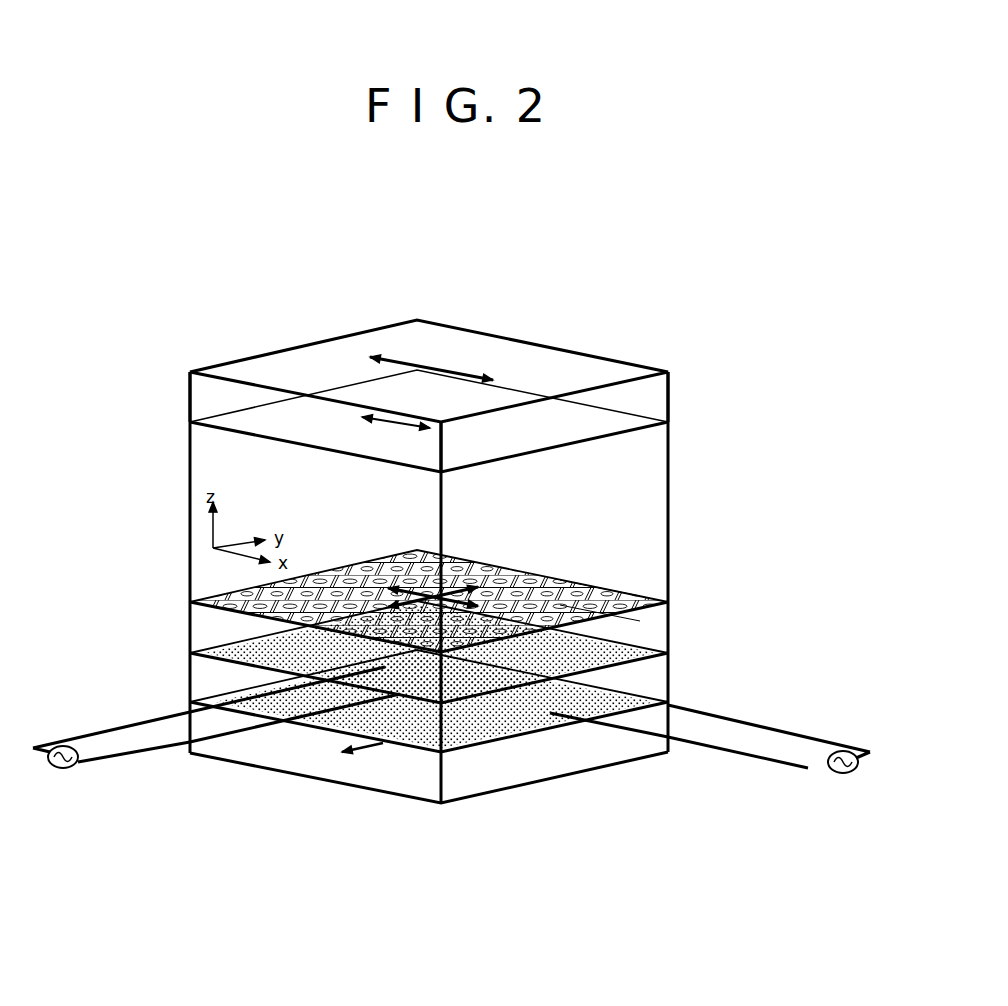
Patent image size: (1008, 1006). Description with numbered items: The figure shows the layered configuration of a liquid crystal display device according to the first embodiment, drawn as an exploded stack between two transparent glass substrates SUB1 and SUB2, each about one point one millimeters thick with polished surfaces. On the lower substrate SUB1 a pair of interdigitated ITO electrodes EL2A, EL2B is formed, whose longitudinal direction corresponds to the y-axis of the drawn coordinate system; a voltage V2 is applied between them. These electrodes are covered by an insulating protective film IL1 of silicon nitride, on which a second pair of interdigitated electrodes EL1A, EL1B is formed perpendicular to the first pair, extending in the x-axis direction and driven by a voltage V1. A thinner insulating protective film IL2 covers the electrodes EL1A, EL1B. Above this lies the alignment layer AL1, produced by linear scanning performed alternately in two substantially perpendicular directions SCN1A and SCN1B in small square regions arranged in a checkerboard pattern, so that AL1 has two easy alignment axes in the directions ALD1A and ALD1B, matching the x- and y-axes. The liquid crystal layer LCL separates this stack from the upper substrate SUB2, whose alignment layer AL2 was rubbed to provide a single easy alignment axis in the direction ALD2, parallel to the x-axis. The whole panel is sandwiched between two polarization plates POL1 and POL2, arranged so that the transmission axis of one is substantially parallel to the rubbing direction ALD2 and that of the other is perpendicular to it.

The polarization plate POL2 is at (456, 370).
The substrate SUB2 is at (189, 372).
The rubbing direction ALD2 is at (367, 419).
The liquid crystal layer LCL is at (210, 459).
The second alignment direction AL2 is at (590, 428).
The easy alignment axis direction ALD1A is at (412, 552).
The easy alignment axis direction ALD1B is at (458, 592).
The alignment layer AL1 is at (668, 602).
The scanning direction SCN1B is at (615, 622).
The scanning direction SCN1A is at (630, 640).
The interdigitated electrode EL1A is at (250, 646).
The interdigitated electrode EL1B is at (636, 644).
The insulating protective film IL2 is at (188, 641).
The insulating protective film IL1 is at (195, 685).
The interdigitated electrode EL2A is at (600, 677).
The interdigitated electrode EL2B is at (540, 725).
The substrate SUB1 is at (483, 772).
The polarization plate POL1 is at (363, 752).
The voltage V1 is at (111, 750).
The voltage V2 is at (781, 747).